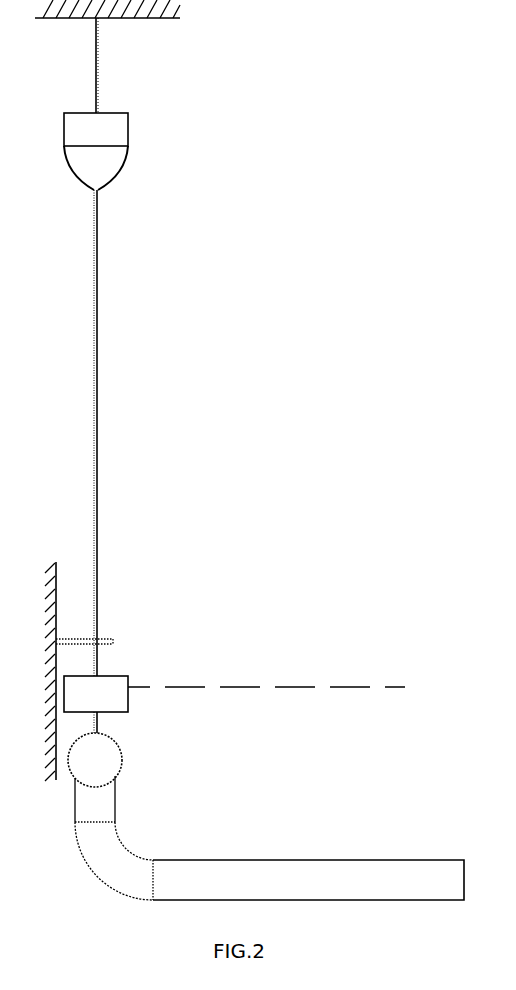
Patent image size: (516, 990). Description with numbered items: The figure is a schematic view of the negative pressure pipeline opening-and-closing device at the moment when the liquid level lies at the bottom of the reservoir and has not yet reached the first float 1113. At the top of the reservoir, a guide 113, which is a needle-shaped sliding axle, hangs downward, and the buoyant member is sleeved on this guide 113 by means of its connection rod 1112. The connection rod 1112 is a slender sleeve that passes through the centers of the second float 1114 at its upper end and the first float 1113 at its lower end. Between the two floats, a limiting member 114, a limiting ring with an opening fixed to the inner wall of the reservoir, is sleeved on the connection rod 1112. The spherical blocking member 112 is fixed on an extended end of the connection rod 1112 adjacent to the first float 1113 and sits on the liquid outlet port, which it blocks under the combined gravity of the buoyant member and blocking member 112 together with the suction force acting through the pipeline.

The guide 113 is at (97, 72).
The second float 1114 is at (118, 136).
The connection rod 1112 is at (97, 315).
The limiting member 114 is at (113, 640).
The first float 1113 is at (125, 702).
The blocking member 112 is at (122, 755).